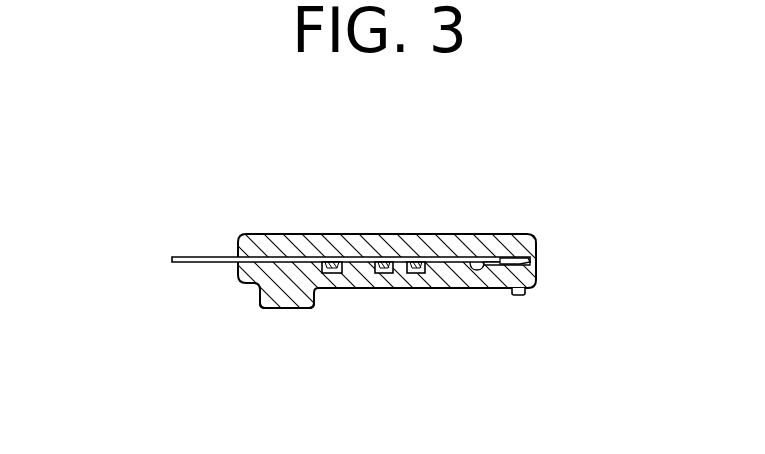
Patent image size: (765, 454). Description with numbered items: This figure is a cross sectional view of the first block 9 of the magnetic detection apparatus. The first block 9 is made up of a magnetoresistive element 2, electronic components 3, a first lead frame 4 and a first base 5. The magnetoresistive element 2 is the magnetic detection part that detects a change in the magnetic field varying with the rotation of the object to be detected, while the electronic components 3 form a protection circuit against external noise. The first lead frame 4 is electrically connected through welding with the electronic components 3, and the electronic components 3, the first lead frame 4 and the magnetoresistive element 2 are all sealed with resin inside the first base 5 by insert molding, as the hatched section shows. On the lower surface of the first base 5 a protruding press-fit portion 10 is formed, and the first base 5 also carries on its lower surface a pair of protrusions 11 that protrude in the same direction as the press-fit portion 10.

The first block 9 is at (226, 203).
The first base 5 is at (412, 250).
The first lead frame 4 is at (199, 255).
The magnetoresistive element 2 is at (537, 263).
The electronic components 3 is at (331, 279).
The press-fit portion 10 is at (279, 303).
The protrusions 11 is at (517, 294).